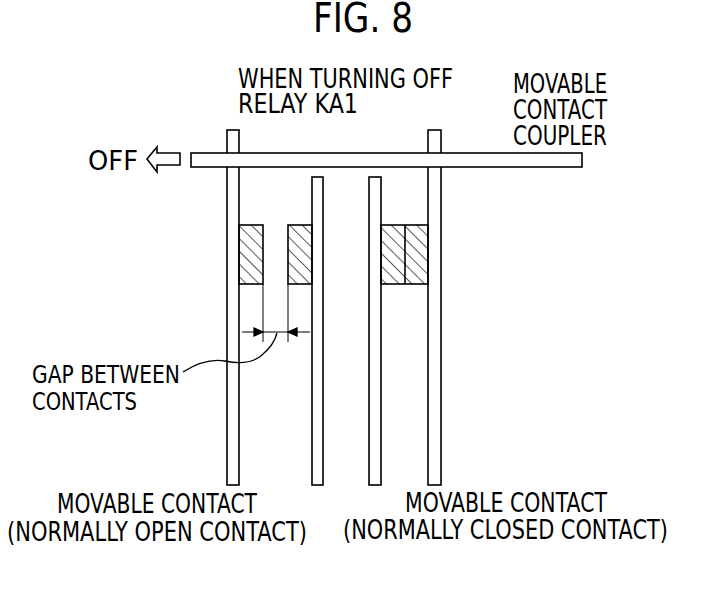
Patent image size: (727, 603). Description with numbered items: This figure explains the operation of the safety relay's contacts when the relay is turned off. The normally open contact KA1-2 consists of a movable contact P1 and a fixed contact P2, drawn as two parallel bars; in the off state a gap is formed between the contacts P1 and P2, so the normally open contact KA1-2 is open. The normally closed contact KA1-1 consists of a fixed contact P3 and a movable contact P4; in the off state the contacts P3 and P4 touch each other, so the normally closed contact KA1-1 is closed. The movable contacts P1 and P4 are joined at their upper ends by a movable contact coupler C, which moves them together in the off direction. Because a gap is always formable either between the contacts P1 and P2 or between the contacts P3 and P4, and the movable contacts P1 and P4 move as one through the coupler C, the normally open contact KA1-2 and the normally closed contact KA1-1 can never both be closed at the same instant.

The movable contact P1 is at (227, 455).
The fixed contact P2 is at (312, 455).
The fixed contact P3 is at (382, 470).
The movable contact P4 is at (442, 452).
The movable contact coupler C is at (538, 167).
The normally closed contact KA1-1 is at (441, 255).
The normally open contact KA1-2 is at (227, 258).